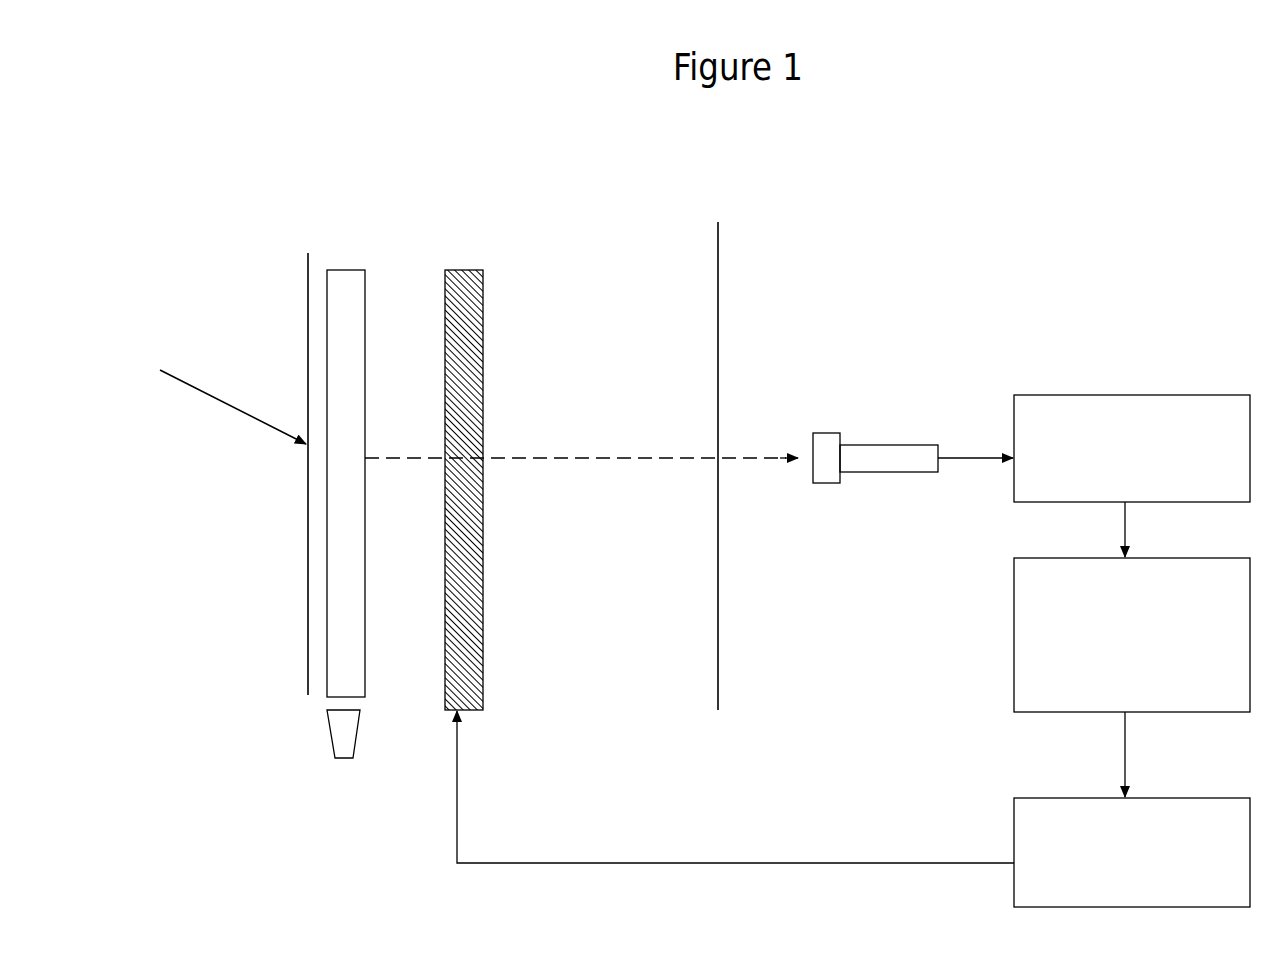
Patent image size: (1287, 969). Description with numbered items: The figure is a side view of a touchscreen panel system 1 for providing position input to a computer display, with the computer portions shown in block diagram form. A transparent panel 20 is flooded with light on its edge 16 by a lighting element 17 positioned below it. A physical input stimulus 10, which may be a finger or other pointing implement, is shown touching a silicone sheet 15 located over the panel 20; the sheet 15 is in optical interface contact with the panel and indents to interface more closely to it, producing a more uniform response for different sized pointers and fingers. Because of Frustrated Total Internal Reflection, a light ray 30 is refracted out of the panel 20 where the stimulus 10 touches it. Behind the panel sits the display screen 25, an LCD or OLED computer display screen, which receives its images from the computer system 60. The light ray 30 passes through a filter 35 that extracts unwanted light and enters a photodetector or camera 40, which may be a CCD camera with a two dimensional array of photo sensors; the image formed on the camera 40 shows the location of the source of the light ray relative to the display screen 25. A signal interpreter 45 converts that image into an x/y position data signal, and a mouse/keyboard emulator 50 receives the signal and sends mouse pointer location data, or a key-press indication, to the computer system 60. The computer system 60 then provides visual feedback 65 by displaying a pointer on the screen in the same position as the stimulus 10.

The touchscreen panel system 1 is at (853, 249).
The physical input stimulus 10 is at (209, 382).
The silicone sheet 15 is at (308, 250).
The edge 16 is at (325, 698).
The lighting element 17 is at (358, 728).
The transparent panel 20 is at (357, 270).
The display screen 25 is at (470, 268).
The light ray 30 is at (654, 457).
The filter 35 is at (718, 232).
The camera 40 is at (877, 445).
The signal interpreter 45 is at (1160, 395).
The mouse/keyboard emulator 50 is at (1033, 558).
The computer system 60 is at (1048, 798).
The visual feedback 65 is at (798, 863).